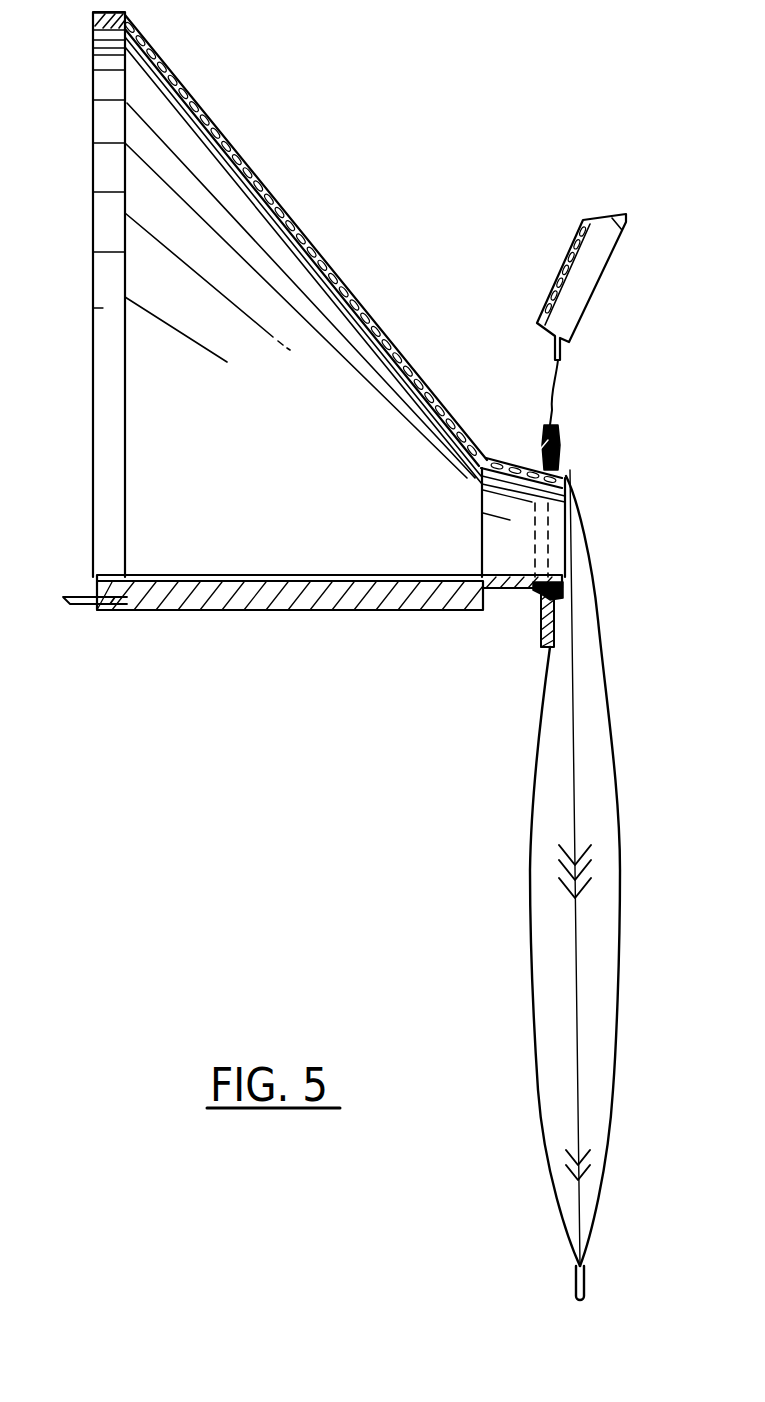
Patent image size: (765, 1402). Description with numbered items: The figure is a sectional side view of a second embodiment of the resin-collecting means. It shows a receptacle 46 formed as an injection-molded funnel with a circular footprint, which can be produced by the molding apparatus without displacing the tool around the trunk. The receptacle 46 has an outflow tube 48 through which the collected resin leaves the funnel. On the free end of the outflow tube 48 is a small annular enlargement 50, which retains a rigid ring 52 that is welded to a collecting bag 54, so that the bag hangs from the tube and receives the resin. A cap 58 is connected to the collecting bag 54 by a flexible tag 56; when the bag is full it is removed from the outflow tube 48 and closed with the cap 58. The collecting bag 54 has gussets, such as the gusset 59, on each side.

The receptacle 46 is at (262, 177).
The outflow tube 48 is at (500, 597).
The annular enlargement 50 is at (572, 590).
The rigid ring 52 is at (535, 448).
The collecting bag 54 is at (617, 801).
The flexible tag 56 is at (562, 367).
The cap 58 is at (562, 257).
The gusset 59 is at (568, 905).